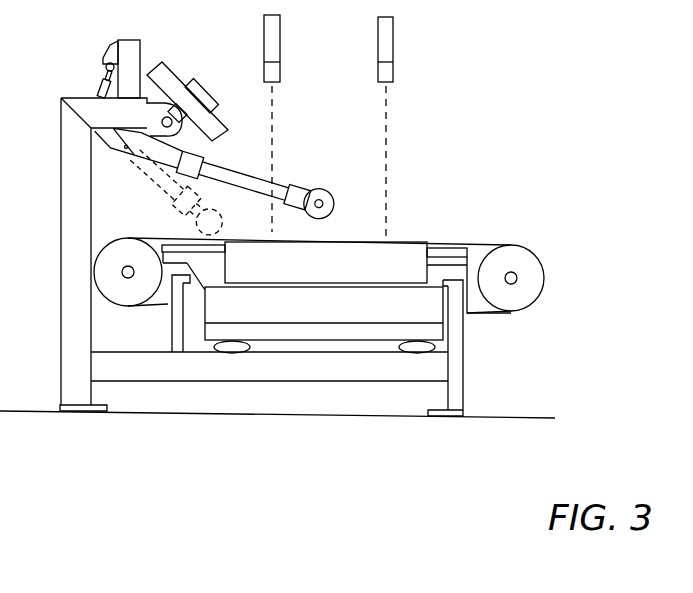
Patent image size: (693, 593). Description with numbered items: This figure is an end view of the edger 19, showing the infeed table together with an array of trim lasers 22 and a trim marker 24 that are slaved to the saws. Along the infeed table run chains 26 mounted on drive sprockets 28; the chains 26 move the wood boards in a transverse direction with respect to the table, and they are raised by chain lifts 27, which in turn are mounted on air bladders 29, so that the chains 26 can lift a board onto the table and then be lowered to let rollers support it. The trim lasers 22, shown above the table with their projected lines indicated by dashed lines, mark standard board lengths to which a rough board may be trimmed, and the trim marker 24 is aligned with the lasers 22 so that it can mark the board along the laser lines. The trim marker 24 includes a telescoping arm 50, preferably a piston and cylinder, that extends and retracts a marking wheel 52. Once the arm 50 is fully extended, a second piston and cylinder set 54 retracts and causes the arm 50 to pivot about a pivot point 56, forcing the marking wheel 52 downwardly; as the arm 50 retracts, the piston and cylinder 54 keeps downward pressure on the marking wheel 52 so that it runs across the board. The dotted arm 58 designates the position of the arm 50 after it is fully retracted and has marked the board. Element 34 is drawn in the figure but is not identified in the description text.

The edger 19 is at (586, 300).
The trim laser 22 is at (166, 70).
The trim marker 24 is at (227, 168).
The chain 26 is at (458, 243).
The chain lift 27 is at (457, 250).
The drive sprocket 28 is at (94, 273).
The air bladder 29 is at (237, 354).
The nozzle 34 is at (281, 45).
The telescoping arm 50 is at (253, 178).
The marking wheel 52 is at (330, 199).
The second piston and cylinder set 54 is at (100, 90).
The pivot point 56 is at (126, 150).
The dotted arm 58 is at (173, 200).